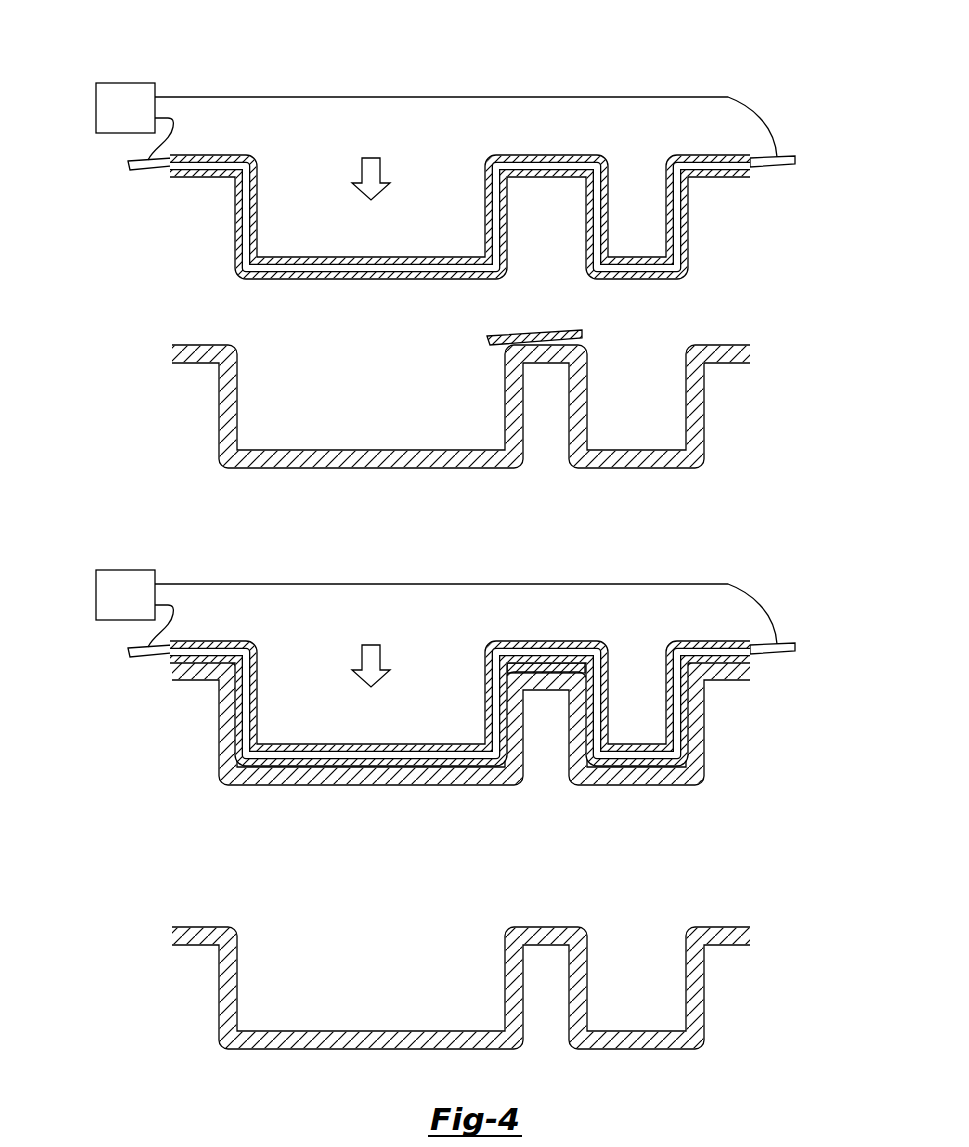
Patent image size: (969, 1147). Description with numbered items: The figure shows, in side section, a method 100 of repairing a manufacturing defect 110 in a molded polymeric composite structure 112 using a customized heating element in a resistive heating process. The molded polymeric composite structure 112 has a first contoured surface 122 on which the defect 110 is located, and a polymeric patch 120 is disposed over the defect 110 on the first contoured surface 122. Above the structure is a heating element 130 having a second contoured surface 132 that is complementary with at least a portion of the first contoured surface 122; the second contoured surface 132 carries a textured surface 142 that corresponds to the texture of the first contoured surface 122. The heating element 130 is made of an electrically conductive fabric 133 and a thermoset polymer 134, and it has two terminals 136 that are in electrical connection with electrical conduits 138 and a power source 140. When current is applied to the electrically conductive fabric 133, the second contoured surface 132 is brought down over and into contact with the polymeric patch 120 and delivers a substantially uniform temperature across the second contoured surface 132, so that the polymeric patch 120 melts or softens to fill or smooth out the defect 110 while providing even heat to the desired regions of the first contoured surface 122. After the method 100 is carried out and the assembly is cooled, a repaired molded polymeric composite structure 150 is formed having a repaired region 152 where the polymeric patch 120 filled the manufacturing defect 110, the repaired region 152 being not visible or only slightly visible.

The method 100 is at (158, 56).
The manufacturing defect 110 is at (511, 470).
The molded polymeric composite structure 112 is at (502, 553).
The polymeric patch 120 is at (545, 330).
The first contoured surface 122 is at (585, 368).
The heating element 130 is at (492, 468).
The second contoured surface 132 is at (292, 281).
The electrically conductive fabric 133 is at (540, 157).
The thermoset polymer 134 is at (552, 158).
The terminals 136 is at (137, 176).
The electrical conduits 138 is at (415, 97).
The power source 140 is at (155, 85).
The textured surface 142 is at (258, 280).
The repaired molded polymeric composite structure 150 is at (502, 951).
The repaired region 152 is at (546, 927).